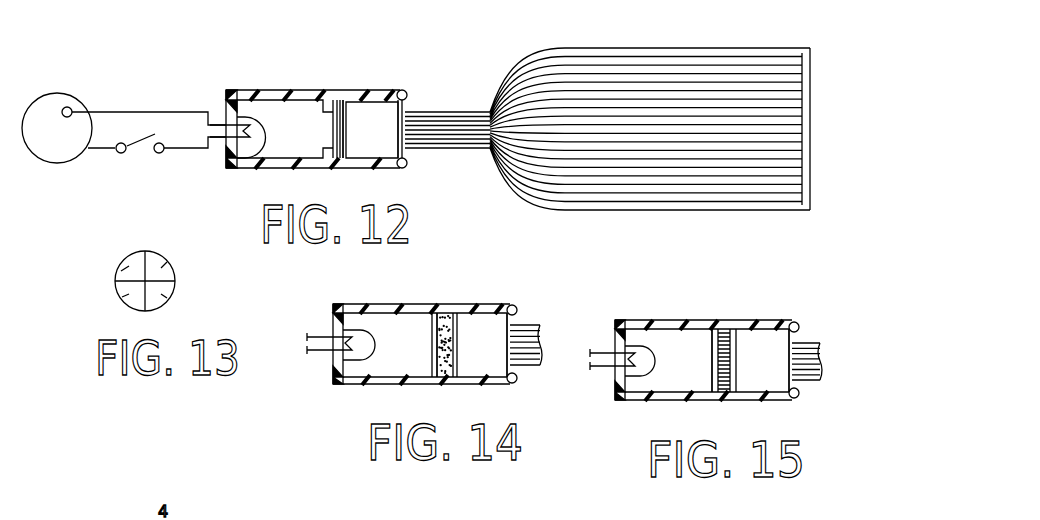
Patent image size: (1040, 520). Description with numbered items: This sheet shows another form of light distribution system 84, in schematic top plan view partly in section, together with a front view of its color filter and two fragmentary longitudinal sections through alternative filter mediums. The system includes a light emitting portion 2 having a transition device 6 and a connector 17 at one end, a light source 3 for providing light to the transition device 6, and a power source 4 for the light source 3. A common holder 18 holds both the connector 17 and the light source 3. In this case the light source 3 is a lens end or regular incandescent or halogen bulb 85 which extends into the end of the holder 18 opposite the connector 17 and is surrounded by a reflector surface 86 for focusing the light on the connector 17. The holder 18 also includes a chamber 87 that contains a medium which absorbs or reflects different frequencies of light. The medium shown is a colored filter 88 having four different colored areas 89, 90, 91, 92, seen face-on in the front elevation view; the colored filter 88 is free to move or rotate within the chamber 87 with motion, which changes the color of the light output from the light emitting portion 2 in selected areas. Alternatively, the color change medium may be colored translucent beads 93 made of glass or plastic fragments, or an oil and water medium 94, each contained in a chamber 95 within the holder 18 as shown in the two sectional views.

In FIG. 12, the light emitting portion 2 is at (641, 49).
In FIG. 12, the light source 3 is at (245, 101).
In FIG. 14, the light source 3 is at (364, 322).
In FIG. 15, the light source 3 is at (647, 333).
In FIG. 12, the power source 4 is at (64, 95).
In FIG. 12, the transition device 6 is at (456, 112).
In FIG. 14, the transition device 6 is at (527, 332).
In FIG. 15, the transition device 6 is at (802, 351).
In FIG. 12, the connector 17 is at (393, 153).
In FIG. 14, the connector 17 is at (488, 366).
In FIG. 15, the connector 17 is at (762, 392).
In FIG. 12, the common holder 18 is at (310, 100).
In FIG. 14, the common holder 18 is at (460, 311).
In FIG. 15, the common holder 18 is at (685, 326).
In FIG. 12, the light distribution system 84 is at (443, 80).
In FIG. 12, the bulb 85 is at (257, 158).
In FIG. 12, the reflector surface 86 is at (258, 104).
In FIG. 12, the chamber 87 is at (349, 93).
In FIG. 12, the colored filter 88 is at (340, 158).
In FIG. 13, the colored filter 88 is at (119, 252).
In FIG. 13, the colored area 89 is at (121, 271).
In FIG. 13, the colored area 90 is at (167, 262).
In FIG. 13, the colored area 91 is at (167, 298).
In FIG. 13, the colored area 92 is at (122, 297).
In FIG. 14, the colored translucent beads 93 is at (440, 377).
In FIG. 15, the oil and water medium 94 is at (728, 330).
In FIG. 14, the chamber 95 is at (421, 331).
In FIG. 15, the chamber 95 is at (700, 351).